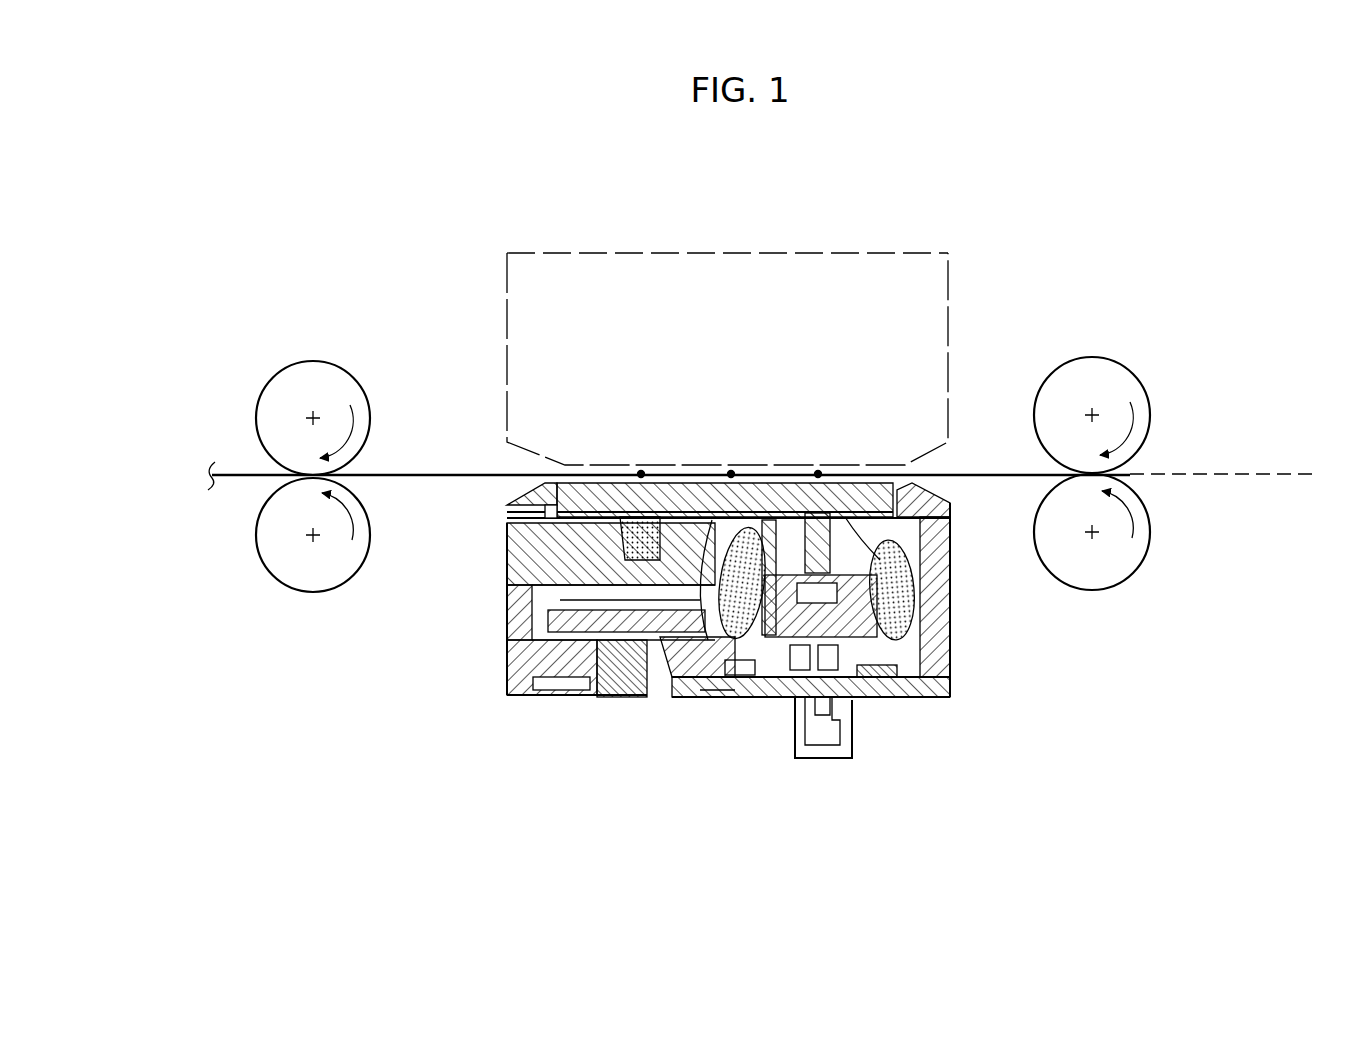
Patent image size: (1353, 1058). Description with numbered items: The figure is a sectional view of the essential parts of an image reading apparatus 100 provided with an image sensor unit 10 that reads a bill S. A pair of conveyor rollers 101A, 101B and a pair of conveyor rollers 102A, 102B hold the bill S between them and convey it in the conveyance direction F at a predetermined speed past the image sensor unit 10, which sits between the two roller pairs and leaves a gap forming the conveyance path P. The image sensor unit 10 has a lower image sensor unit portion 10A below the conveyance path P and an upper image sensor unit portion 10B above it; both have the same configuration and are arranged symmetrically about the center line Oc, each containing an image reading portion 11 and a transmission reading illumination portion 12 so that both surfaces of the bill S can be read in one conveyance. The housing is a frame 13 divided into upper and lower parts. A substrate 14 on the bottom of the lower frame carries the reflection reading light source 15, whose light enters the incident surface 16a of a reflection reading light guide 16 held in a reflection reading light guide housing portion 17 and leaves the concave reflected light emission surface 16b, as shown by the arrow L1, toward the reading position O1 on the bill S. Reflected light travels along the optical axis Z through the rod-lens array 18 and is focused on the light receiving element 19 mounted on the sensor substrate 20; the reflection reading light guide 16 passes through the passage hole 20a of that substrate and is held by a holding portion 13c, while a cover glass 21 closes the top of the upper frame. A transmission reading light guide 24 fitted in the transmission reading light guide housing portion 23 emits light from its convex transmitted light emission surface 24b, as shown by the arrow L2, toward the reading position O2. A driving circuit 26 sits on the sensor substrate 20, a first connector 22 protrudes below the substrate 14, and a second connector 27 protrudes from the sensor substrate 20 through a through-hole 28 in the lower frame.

The image sensor unit 10 is at (418, 695).
The lower image sensor unit portion 10A is at (855, 832).
The upper image sensor unit portion 10B is at (602, 173).
The image reading portion 11 is at (525, 225).
The transmission reading illumination portion 12 is at (748, 225).
The frame 13 is at (507, 548).
The holding portion 13c is at (748, 490).
The substrate 14 is at (935, 690).
The reflection reading light source 15 is at (905, 695).
The reflection reading light guide 16 is at (912, 620).
The incident surface 16a is at (945, 675).
The reflected light emission surface 16b is at (768, 495).
The reflection reading light guide housing portion 17 is at (920, 560).
The rod-lens array 18 is at (818, 515).
The light receiving element 19 is at (795, 695).
The sensor substrate 20 is at (507, 650).
The passage hole 20a is at (705, 690).
The cover glass 21 is at (868, 485).
The first connector 22 is at (830, 760).
The transmission reading light guide housing portion 23 is at (712, 520).
The transmission reading light guide 24 is at (507, 506).
The transmitted light emission surface 24b is at (648, 515).
The driving circuit 26 is at (548, 602).
The second connector 27 is at (612, 700).
The through-hole 28 is at (590, 680).
The image reading apparatus 100 is at (1054, 262).
The conveyor roller 101A is at (1092, 357).
The conveyor roller 101B is at (1092, 590).
The conveyor roller 102A is at (313, 361).
The conveyor roller 102B is at (313, 592).
The bill S is at (375, 478).
The conveyance path P is at (565, 470).
The conveyance direction F is at (1250, 463).
The optical axis Z is at (641, 480).
The reading position O1 is at (818, 474).
The reading position O2 is at (641, 474).
The center line Oc is at (731, 474).
The arrow L1 is at (850, 523).
The arrow L2 is at (645, 500).